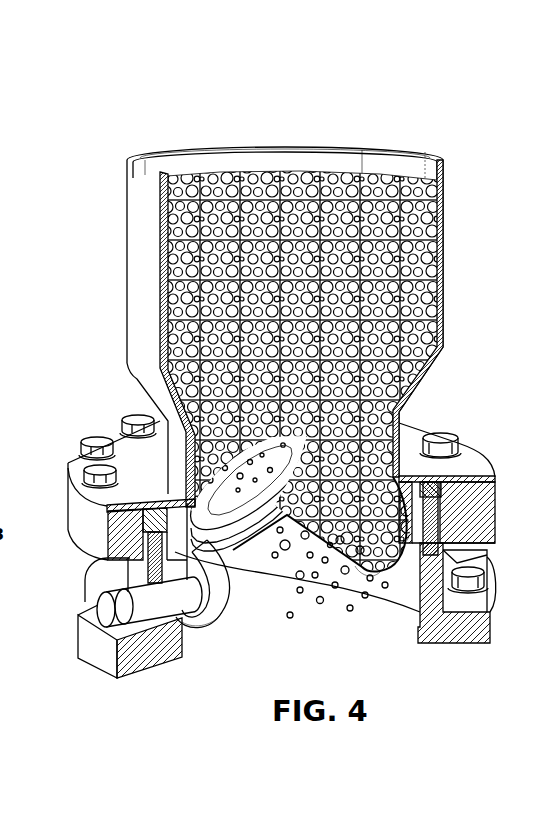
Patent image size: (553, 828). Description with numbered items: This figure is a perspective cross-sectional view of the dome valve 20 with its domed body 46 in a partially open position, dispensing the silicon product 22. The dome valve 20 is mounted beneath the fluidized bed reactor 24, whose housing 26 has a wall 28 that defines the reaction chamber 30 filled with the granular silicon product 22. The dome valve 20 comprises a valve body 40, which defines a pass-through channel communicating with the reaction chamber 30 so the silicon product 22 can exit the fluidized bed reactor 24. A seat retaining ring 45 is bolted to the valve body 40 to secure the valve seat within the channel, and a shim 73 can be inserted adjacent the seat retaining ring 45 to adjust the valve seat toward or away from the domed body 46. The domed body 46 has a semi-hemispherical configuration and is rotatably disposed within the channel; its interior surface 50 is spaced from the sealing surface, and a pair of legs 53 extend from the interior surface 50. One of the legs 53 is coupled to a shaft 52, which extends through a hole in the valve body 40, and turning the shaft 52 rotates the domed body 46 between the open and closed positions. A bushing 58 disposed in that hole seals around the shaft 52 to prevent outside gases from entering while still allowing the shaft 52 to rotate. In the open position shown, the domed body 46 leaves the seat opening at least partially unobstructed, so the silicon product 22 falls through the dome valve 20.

The dome valve 20 is at (506, 497).
The silicon product 22 is at (432, 270).
The fluidized bed reactor 24 is at (450, 130).
The housing 26 is at (458, 175).
The wall 28 is at (446, 222).
The reaction chamber 30 is at (184, 170).
The valve body 40 is at (455, 628).
The seat retaining ring 45 is at (447, 503).
The domed body 46 is at (235, 540).
The interior surface 50 is at (236, 501).
The shaft 52 is at (103, 610).
The legs 53 is at (217, 598).
The bushing 58 is at (117, 583).
The shim 73 is at (447, 533).